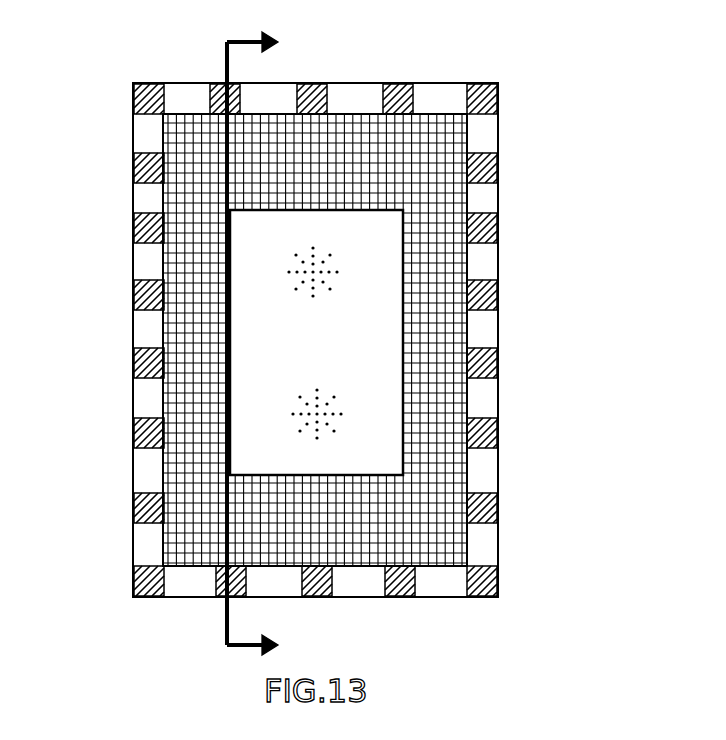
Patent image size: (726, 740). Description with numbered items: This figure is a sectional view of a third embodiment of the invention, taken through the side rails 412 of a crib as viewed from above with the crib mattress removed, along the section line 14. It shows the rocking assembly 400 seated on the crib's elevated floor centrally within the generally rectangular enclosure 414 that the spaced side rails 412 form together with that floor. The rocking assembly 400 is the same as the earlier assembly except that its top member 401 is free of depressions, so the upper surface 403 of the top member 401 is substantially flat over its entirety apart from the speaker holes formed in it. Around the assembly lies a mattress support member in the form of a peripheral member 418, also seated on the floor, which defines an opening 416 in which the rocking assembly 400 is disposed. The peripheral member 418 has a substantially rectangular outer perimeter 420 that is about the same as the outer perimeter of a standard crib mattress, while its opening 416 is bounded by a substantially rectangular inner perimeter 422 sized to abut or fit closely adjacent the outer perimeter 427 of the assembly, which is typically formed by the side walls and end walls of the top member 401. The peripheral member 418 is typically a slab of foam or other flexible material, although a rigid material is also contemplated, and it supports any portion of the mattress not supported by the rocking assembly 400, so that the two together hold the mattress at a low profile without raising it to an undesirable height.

The section line 14 is at (267, 345).
The rocking assembly 400 is at (362, 207).
The top member 401 is at (258, 240).
The upper surface 403 is at (258, 370).
The side rails 412 is at (133, 228).
The enclosure 414 is at (450, 188).
The opening 416 is at (403, 258).
The peripheral member 418 is at (472, 327).
The outer perimeter 420 is at (473, 472).
The inner perimeter 422 is at (403, 423).
The outer perimeter 427 is at (475, 523).